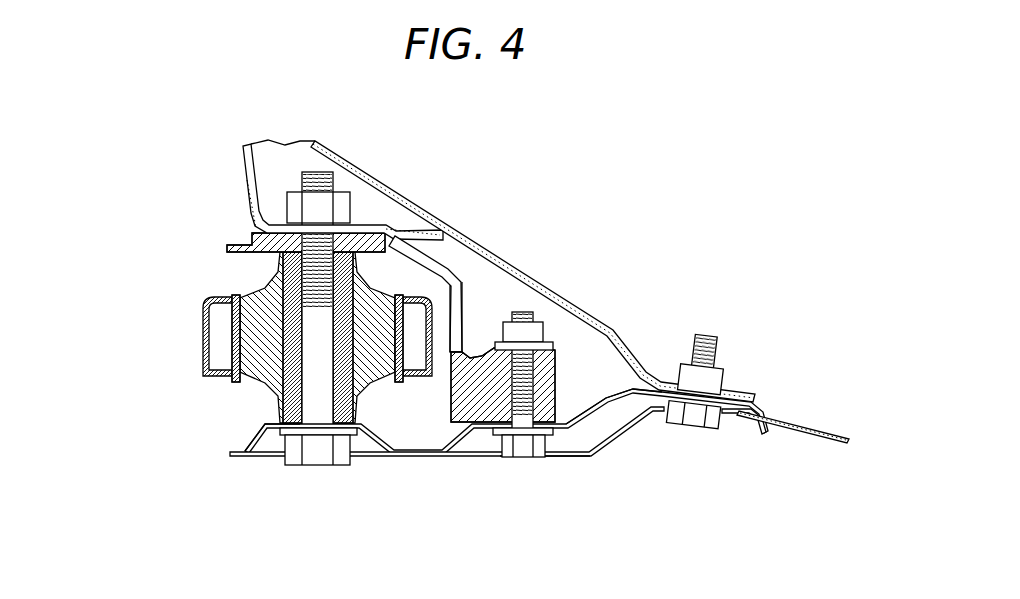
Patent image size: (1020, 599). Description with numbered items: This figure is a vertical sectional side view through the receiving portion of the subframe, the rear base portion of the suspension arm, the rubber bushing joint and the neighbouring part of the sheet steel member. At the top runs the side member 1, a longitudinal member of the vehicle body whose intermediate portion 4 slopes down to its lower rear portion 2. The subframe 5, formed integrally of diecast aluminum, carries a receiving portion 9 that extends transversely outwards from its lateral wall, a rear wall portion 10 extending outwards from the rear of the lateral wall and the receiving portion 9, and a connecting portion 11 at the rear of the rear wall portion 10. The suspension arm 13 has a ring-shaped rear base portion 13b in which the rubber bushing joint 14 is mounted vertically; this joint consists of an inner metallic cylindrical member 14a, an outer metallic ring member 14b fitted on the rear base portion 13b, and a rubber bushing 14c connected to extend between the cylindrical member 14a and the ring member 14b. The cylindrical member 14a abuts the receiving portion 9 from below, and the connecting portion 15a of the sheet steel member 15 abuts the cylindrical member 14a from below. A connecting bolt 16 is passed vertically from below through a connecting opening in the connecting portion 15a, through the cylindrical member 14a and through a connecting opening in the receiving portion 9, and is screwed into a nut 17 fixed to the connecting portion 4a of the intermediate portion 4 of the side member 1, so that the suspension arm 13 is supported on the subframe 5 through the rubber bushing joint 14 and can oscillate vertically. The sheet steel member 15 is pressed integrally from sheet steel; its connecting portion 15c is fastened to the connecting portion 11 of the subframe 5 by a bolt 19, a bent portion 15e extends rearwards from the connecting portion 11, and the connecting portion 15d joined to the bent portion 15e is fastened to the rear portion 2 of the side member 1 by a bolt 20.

The side member 1 is at (405, 193).
The rear portion 2 is at (808, 428).
The intermediate portion 4 is at (563, 300).
The connecting portion 4a is at (246, 182).
The subframe 5 is at (443, 258).
The receiving portion 9 is at (236, 240).
The rear wall portion 10 is at (466, 300).
The connecting portion 11 is at (548, 395).
The suspension arm 13 is at (273, 338).
The rear base portion 13b is at (208, 305).
The rubber bushing joint 14 is at (148, 398).
The inner metallic cylindrical member 14a is at (258, 450).
The outer metallic ring member 14b is at (277, 372).
The rubber bushing 14c is at (288, 408).
The sheet steel member 15 is at (577, 460).
The connecting portion 15a is at (361, 432).
The connecting portion 15c is at (486, 430).
The connecting portion 15d is at (748, 410).
The bent portion 15e is at (612, 402).
The connecting bolt 16 is at (318, 458).
The nut 17 is at (343, 198).
The bolt 19 is at (521, 456).
The bolt 20 is at (694, 428).